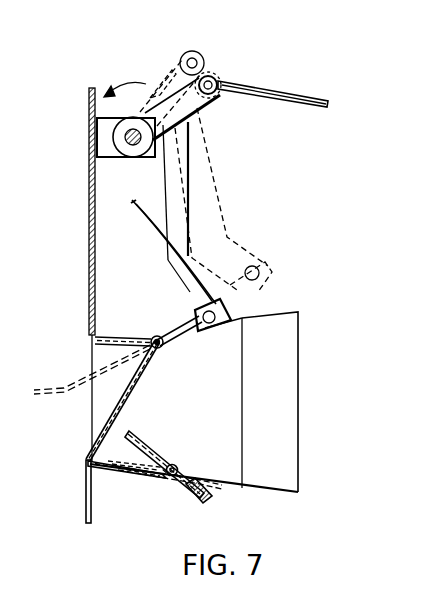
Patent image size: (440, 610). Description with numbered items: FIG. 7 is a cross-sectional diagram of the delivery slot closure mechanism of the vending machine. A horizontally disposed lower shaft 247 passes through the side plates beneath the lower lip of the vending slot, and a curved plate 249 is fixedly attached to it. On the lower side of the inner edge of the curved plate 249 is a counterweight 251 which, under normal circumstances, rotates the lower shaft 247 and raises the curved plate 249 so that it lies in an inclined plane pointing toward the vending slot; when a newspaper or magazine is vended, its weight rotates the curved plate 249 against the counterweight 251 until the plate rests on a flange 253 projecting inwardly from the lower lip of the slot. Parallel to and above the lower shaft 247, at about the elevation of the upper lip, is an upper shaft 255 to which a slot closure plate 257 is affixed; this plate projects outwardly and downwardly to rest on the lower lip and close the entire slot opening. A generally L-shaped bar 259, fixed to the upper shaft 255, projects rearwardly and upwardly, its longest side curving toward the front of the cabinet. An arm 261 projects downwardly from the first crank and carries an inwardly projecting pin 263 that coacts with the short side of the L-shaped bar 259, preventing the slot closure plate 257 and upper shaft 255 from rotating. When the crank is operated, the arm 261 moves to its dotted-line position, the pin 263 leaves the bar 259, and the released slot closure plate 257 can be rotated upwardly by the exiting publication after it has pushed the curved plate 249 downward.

The arm 261 is at (168, 171).
The L-shaped bar 259 is at (137, 213).
The pin 263 is at (228, 311).
The upper shaft 255 is at (163, 346).
The slot closure plate 257 is at (134, 398).
The flange 253 is at (110, 480).
The curved plate 249 is at (158, 448).
The lower shaft 247 is at (170, 477).
The counterweight 251 is at (207, 504).